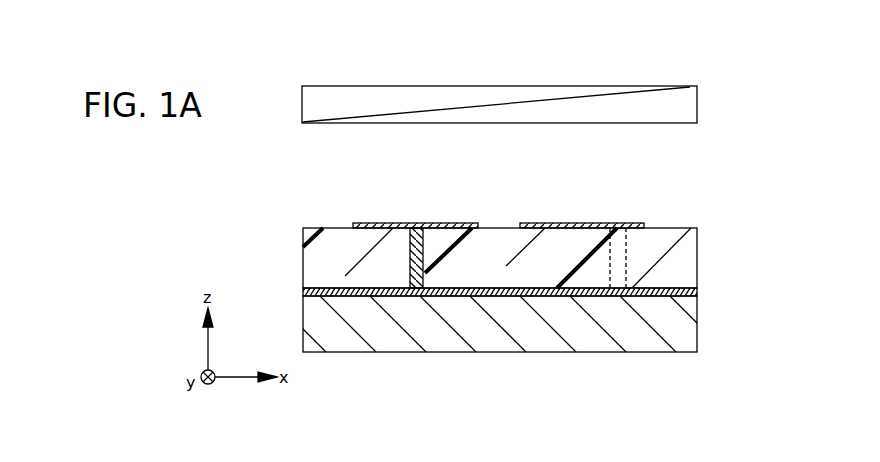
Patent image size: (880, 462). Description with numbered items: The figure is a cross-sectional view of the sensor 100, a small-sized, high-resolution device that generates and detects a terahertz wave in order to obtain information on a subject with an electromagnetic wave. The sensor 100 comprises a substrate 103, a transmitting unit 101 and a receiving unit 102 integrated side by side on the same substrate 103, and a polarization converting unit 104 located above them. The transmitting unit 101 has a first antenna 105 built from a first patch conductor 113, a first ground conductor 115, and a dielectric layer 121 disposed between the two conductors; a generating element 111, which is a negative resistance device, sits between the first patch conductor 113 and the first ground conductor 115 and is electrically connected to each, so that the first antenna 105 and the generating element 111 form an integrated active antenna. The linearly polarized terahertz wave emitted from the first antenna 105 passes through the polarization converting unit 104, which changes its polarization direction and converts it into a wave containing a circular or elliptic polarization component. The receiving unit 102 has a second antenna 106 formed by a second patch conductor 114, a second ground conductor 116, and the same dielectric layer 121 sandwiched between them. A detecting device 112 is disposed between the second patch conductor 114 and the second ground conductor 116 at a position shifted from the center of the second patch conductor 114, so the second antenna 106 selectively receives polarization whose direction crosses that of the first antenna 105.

The sensor 100 is at (520, 435).
The transmitting unit 101 is at (478, 203).
The receiving unit 102 is at (644, 203).
The substrate 103 is at (688, 312).
The polarization converting unit 104 is at (690, 105).
The first antenna 105 is at (348, 225).
The second antenna 106 is at (505, 225).
The generating element 111 is at (417, 276).
The detecting device 112 is at (618, 263).
The first patch conductor 113 is at (447, 224).
The second patch conductor 114 is at (553, 227).
The first ground conductor 115 is at (362, 295).
The second ground conductor 116 is at (660, 296).
The dielectric layer 121 is at (690, 255).